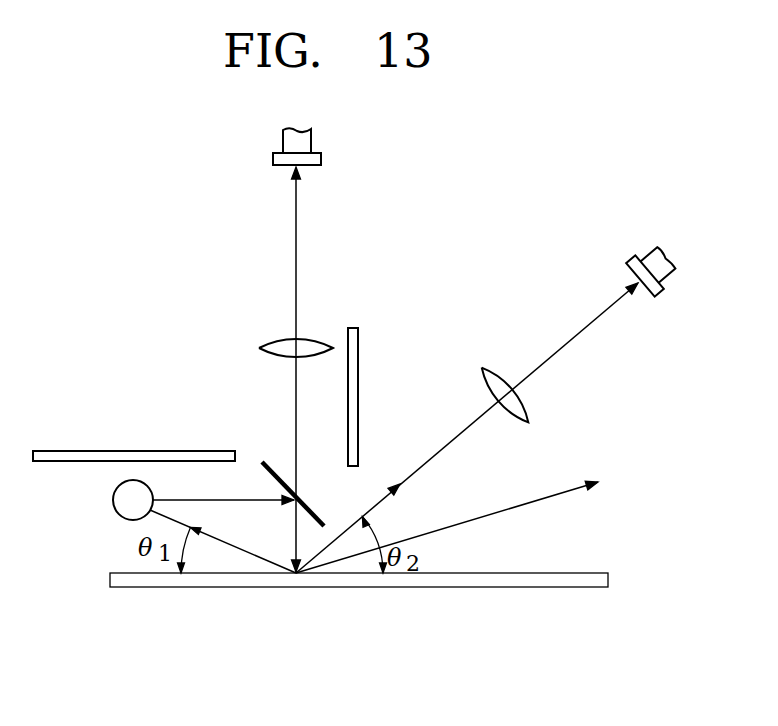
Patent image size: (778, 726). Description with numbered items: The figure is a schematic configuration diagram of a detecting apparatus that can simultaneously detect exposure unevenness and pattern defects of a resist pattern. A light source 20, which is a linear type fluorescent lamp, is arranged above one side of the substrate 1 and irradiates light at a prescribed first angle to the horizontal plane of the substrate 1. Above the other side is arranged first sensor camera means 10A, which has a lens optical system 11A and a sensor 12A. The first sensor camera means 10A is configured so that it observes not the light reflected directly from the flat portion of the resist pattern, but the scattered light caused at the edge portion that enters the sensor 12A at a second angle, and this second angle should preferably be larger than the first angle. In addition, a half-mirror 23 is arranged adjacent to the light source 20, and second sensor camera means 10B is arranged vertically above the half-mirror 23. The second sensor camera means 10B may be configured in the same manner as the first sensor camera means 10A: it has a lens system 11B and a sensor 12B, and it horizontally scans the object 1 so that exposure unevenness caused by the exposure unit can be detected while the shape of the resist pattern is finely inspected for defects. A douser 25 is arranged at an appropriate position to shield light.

The substrate 1 is at (342, 580).
The light source 20 is at (117, 503).
The half-mirror 23 is at (262, 462).
The douser 25 is at (357, 355).
The lens optical system 11A is at (495, 378).
The lens system 11B is at (263, 346).
The sensor 12A is at (633, 257).
The sensor 12B is at (273, 155).
The first sensor camera means 10A is at (545, 232).
The second sensor camera means 10B is at (325, 232).